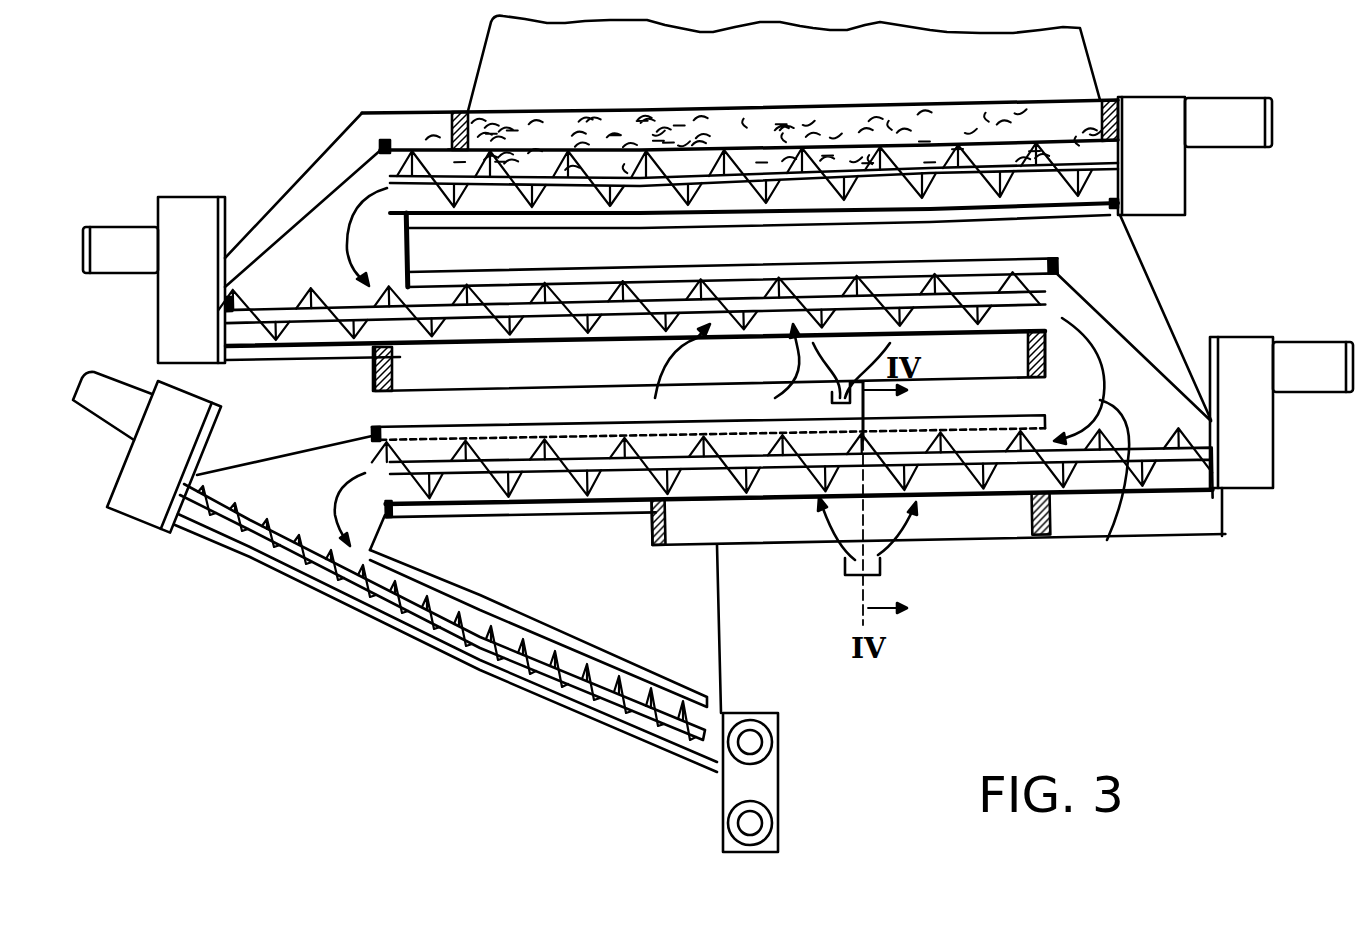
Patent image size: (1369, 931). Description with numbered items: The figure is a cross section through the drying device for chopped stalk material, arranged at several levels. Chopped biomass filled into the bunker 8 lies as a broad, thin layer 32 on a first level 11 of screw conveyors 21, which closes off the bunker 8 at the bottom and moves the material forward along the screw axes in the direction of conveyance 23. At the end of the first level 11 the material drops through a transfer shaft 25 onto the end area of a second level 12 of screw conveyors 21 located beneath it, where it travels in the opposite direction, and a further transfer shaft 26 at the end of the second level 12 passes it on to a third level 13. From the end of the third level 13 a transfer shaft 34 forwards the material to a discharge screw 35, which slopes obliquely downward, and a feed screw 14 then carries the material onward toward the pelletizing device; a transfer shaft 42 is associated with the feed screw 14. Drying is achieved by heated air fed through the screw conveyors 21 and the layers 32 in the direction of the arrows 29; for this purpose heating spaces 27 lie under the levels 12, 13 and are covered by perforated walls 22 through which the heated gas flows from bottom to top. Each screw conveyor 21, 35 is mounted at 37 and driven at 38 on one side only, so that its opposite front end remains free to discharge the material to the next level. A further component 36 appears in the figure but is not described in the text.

The bunker 8 is at (1068, 62).
The first level 11 is at (754, 153).
The second level 12 is at (983, 280).
The third level 13 is at (987, 440).
The feed screw 14 is at (763, 747).
The screw conveyor 21 is at (590, 147).
The perforated wall 22 is at (612, 345).
The direction of conveyance 23 is at (353, 207).
The transfer shaft 25 is at (325, 247).
The transfer shaft 26 is at (1122, 385).
The heating space 27 is at (500, 363).
The arrows 29 is at (928, 590).
The layer 32 is at (770, 125).
The transfer shaft 34 is at (295, 487).
The discharge screw 35 is at (443, 628).
The support bracket 36 is at (780, 716).
The mounting 37 is at (190, 487).
The drive 38 is at (128, 247).
The transfer shaft 42 is at (824, 392).